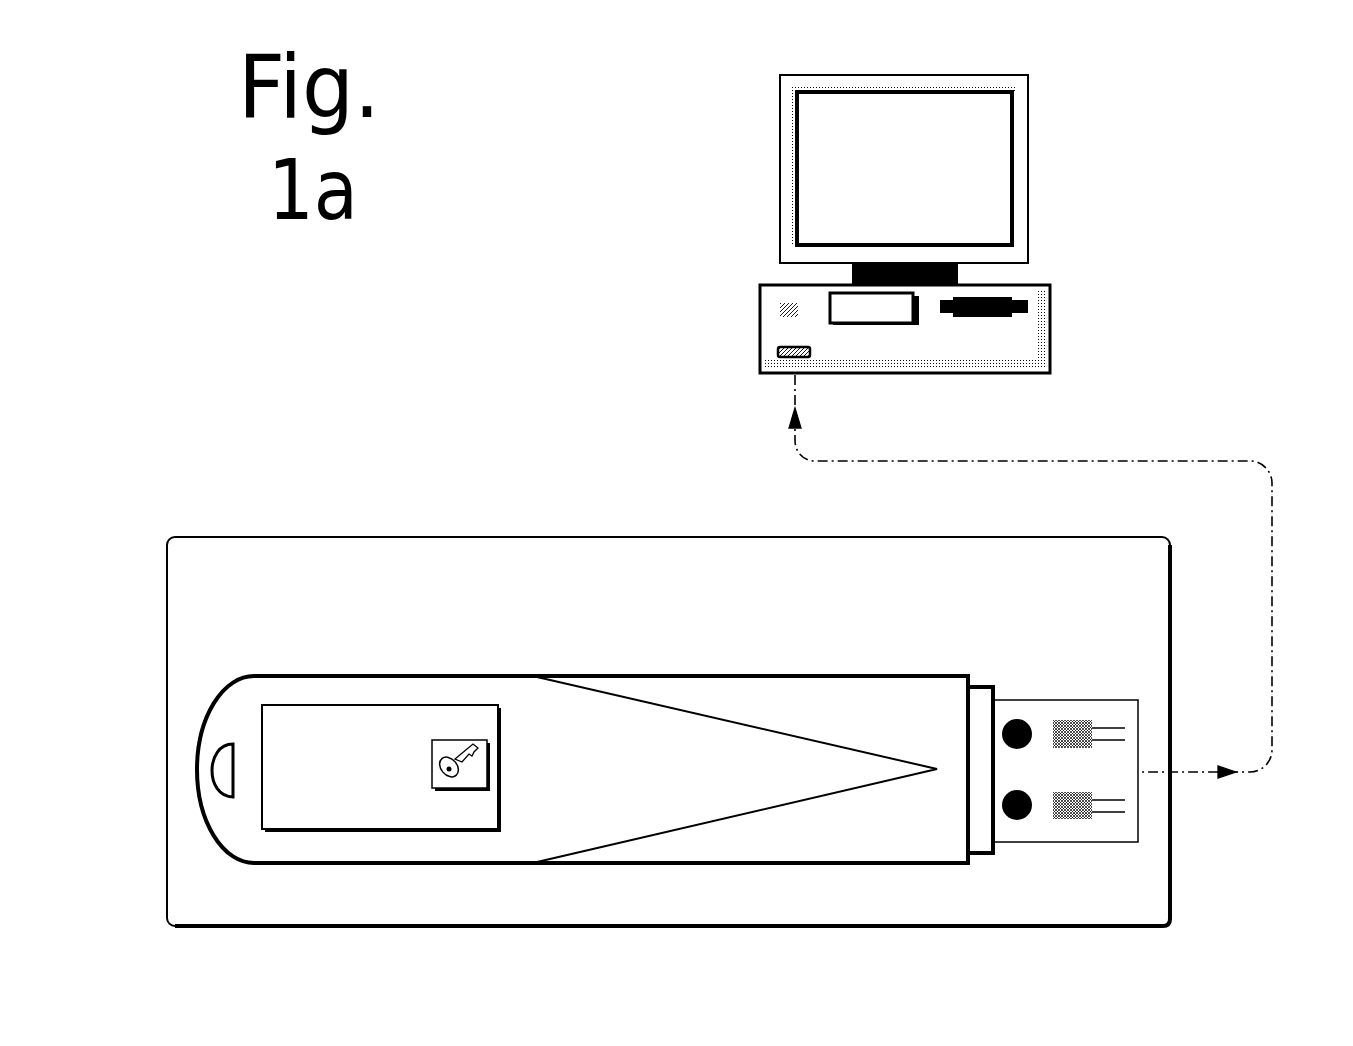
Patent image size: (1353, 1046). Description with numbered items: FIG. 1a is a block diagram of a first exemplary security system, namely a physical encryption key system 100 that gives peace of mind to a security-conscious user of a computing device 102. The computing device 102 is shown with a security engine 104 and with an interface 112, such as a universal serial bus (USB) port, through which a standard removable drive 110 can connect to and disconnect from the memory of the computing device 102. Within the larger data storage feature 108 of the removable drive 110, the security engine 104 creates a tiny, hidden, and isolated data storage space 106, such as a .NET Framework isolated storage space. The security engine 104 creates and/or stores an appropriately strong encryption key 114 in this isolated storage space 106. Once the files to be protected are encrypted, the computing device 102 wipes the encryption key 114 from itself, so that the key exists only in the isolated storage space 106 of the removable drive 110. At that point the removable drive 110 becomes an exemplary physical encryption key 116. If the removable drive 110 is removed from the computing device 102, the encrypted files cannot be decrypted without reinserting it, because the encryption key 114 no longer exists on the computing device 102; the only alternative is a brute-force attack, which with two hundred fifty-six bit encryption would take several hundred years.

The physical encryption key system 100 is at (597, 372).
The computing device 102 is at (787, 286).
The security engine 104 is at (833, 294).
The isolated data storage space 106 is at (448, 735).
The data storage feature 108 is at (473, 740).
The removable drive 110 is at (868, 675).
The interface 112 is at (783, 346).
The encryption key 114 is at (443, 752).
The physical encryption key 116 is at (368, 537).